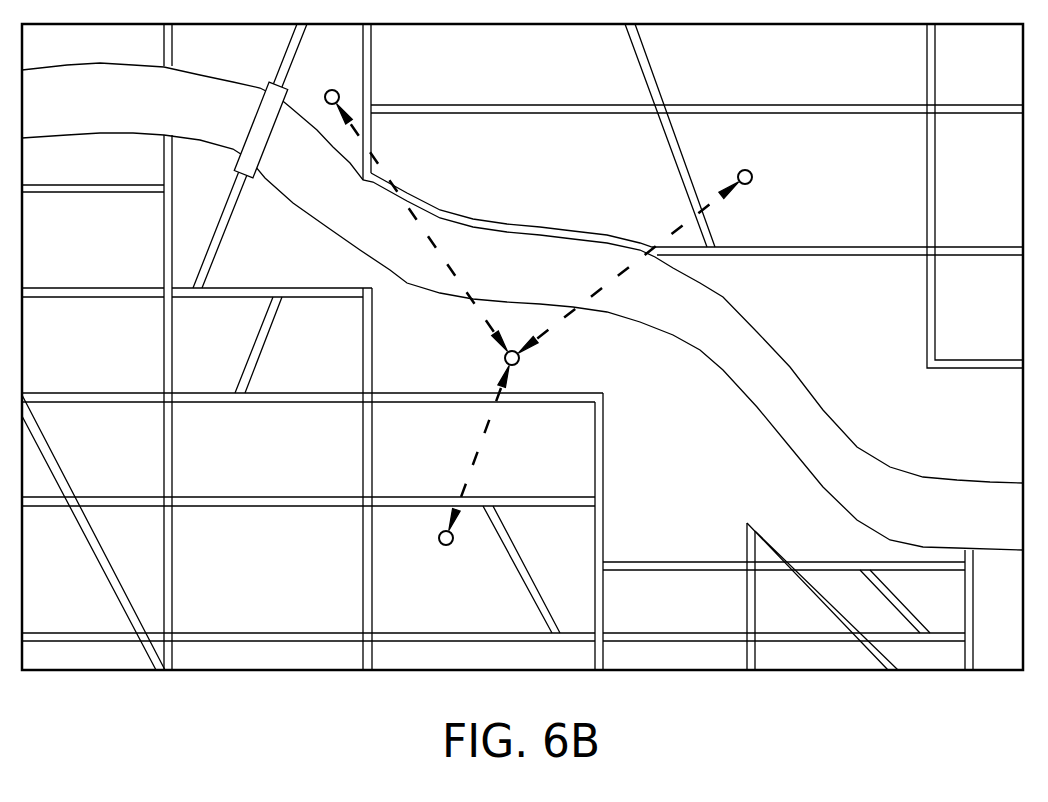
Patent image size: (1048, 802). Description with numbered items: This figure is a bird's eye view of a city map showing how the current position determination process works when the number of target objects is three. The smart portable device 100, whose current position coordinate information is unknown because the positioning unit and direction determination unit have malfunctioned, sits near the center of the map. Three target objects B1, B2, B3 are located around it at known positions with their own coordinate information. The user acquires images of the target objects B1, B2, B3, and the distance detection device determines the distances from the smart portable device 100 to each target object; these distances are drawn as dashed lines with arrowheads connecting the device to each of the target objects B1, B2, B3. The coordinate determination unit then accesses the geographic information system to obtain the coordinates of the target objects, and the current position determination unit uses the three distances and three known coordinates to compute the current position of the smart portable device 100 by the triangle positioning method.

The smart portable device 100 is at (519, 361).
The target object B1 is at (331, 90).
The target object B2 is at (440, 542).
The target object B3 is at (753, 170).